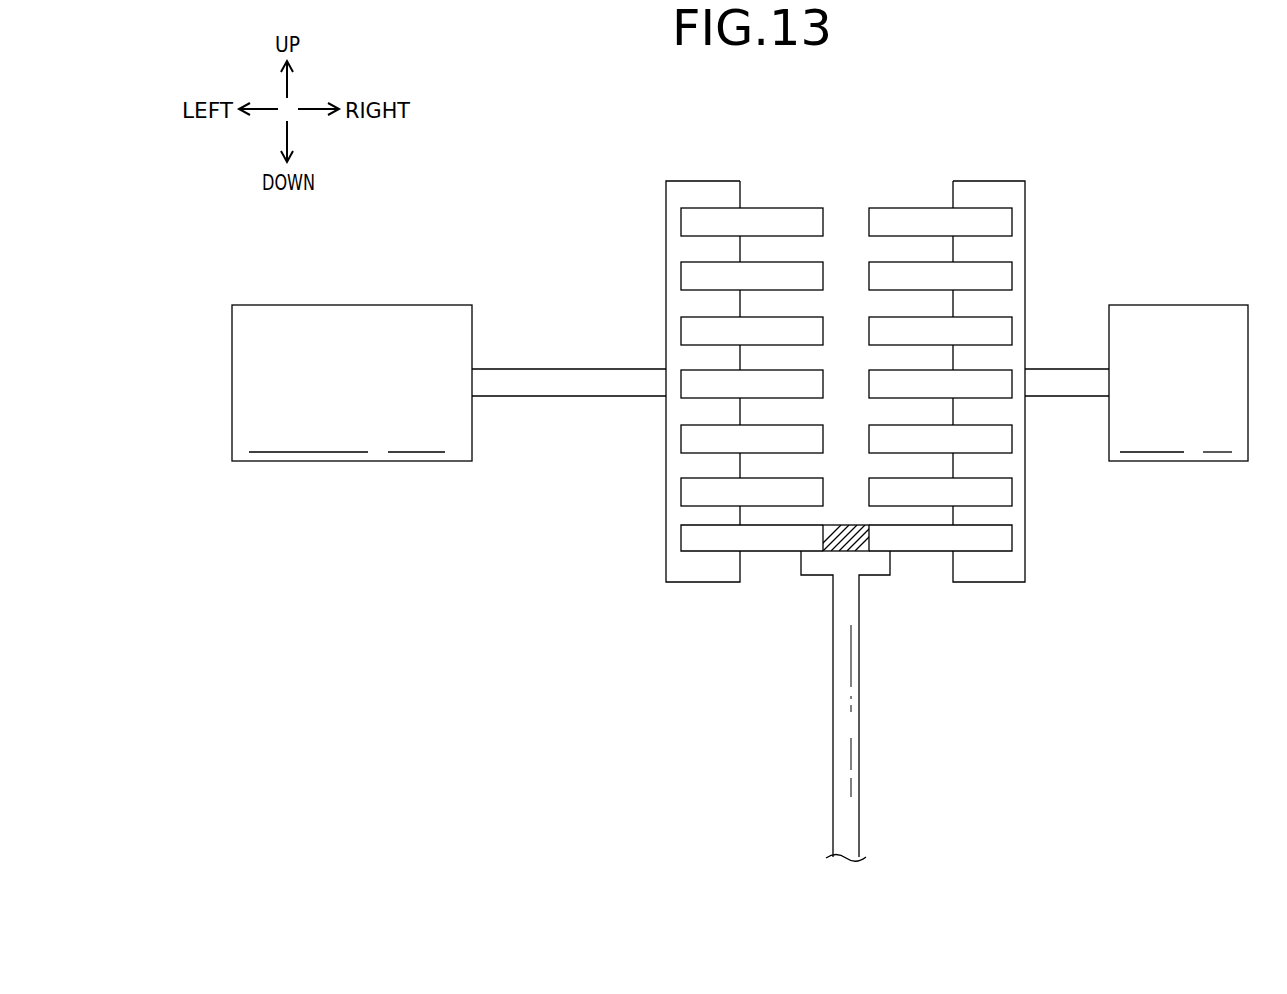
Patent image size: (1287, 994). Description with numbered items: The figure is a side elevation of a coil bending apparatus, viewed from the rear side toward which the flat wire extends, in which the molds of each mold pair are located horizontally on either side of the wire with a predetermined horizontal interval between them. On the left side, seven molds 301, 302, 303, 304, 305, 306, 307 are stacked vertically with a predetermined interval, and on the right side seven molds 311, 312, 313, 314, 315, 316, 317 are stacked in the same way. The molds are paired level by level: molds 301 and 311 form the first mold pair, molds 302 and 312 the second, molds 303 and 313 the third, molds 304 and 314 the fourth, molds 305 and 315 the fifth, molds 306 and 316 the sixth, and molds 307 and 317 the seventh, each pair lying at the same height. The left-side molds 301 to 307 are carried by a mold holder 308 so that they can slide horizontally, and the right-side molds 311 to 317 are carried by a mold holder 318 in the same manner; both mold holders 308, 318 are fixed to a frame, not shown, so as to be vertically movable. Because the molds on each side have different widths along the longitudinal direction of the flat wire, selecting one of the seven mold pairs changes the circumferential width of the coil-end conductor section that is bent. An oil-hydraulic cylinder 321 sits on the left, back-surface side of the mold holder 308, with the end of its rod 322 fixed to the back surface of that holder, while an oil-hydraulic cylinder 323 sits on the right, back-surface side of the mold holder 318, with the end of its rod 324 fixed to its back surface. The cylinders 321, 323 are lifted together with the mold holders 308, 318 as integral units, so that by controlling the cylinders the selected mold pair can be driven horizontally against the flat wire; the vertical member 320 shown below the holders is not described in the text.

The left-side mold 301 is at (756, 218).
The left-side mold 302 is at (756, 272).
The left-side mold 303 is at (756, 327).
The left-side mold 304 is at (756, 380).
The left-side mold 305 is at (756, 435).
The left-side mold 306 is at (756, 488).
The left-side mold 307 is at (769, 543).
The mold holder 308 is at (708, 187).
The right-side mold 311 is at (880, 218).
The right-side mold 312 is at (880, 272).
The right-side mold 313 is at (880, 327).
The right-side mold 314 is at (880, 380).
The right-side mold 315 is at (880, 435).
The right-side mold 316 is at (880, 488).
The right-side mold 317 is at (923, 543).
The mold holder 318 is at (992, 187).
The shaft 320 is at (848, 716).
The oil-hydraulic cylinder 321 is at (377, 452).
The rod 322 is at (577, 388).
The oil-hydraulic cylinder 323 is at (1192, 452).
The rod 324 is at (1063, 387).